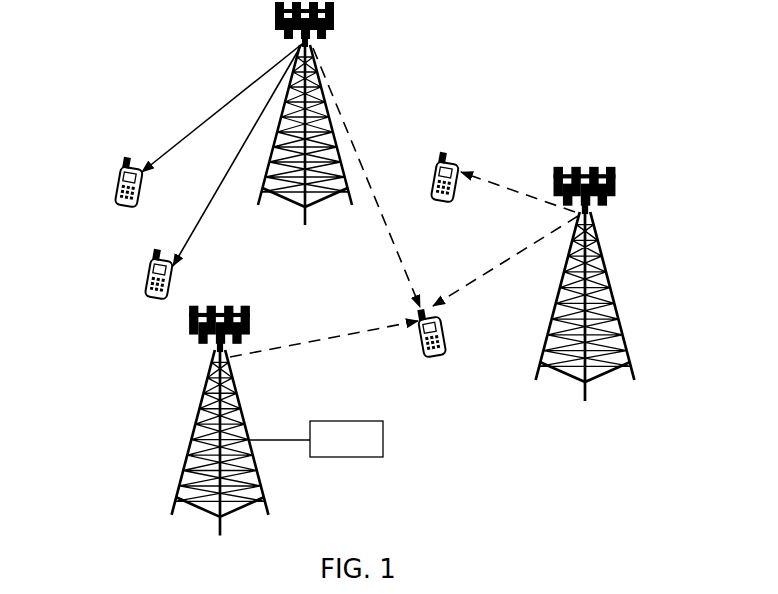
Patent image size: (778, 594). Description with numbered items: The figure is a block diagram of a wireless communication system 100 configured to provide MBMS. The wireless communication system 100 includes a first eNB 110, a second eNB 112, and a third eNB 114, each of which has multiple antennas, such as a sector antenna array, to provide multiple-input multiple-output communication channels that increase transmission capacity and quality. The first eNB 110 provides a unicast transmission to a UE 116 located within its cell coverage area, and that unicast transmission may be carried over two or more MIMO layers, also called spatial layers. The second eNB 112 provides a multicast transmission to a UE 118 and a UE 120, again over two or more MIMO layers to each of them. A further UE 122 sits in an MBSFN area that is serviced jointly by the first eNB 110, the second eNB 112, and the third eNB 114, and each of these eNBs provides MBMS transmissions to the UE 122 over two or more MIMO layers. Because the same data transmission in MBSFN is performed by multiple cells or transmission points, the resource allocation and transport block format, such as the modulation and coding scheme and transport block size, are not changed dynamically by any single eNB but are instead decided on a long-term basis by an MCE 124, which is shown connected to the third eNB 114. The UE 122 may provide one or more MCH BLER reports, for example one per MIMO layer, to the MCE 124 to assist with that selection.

The wireless communication system 100 is at (112, 70).
The first eNB 110 is at (607, 303).
The second eNB 112 is at (287, 108).
The third eNB 114 is at (201, 430).
The UE 116 is at (448, 162).
The UE 118 is at (117, 172).
The UE 120 is at (148, 266).
The UE 122 is at (446, 329).
The MCE 124 is at (386, 436).